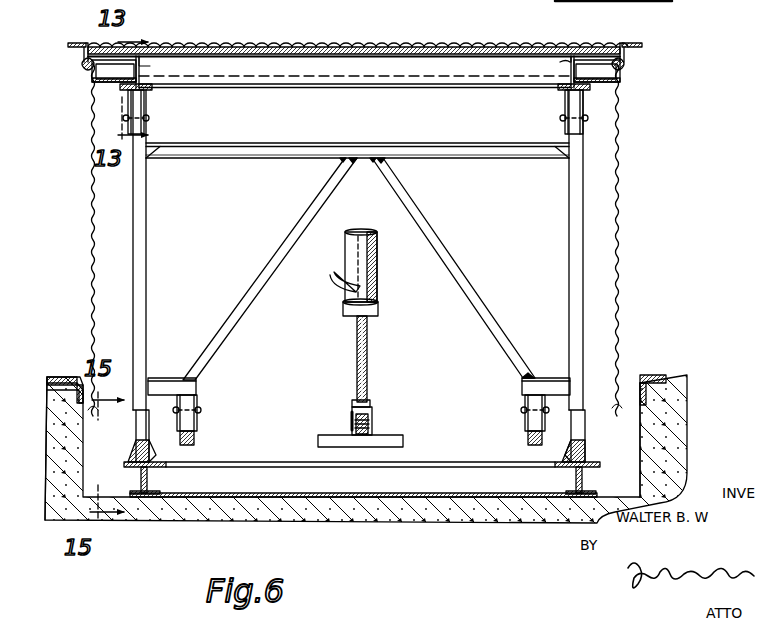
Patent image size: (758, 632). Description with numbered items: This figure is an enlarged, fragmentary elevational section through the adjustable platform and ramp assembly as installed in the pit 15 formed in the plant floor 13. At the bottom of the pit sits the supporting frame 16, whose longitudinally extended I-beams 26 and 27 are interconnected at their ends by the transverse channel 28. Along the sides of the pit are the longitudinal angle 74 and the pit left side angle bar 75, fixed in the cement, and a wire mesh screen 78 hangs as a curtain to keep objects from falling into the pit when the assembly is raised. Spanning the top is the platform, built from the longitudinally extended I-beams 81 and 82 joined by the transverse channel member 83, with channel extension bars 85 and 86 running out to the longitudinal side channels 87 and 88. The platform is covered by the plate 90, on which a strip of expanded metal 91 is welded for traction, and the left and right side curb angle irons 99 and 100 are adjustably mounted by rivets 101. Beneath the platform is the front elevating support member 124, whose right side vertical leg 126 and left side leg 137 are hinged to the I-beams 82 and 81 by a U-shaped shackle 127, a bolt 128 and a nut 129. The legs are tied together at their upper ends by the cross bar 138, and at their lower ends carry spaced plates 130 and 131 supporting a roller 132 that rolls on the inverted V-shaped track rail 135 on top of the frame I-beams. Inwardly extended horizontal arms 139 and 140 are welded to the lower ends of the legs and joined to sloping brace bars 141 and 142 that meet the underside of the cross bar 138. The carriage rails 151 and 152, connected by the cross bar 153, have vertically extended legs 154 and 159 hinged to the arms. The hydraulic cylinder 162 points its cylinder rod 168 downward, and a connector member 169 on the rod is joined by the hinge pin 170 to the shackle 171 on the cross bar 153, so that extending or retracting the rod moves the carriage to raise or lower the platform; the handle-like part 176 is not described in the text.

The floor 13 is at (684, 375).
The pit 15 is at (650, 443).
The supporting frame 16 is at (446, 462).
The I-beam 26 is at (574, 480).
The I-beam 27 is at (148, 482).
The transverse channel 28 is at (262, 470).
The longitudinal angle 74 is at (79, 380).
The pit left side angle bar 75 is at (648, 378).
The wire mesh screen 78 is at (90, 246).
The I-beam 81 is at (566, 54).
The I-beam 82 is at (150, 66).
The transverse channel member 83 is at (268, 68).
The channel extension bar 85 is at (598, 68).
The channel extension bar 86 is at (114, 68).
The longitudinal side channel 87 is at (622, 72).
The longitudinal side channel 88 is at (94, 74).
The plate 90 is at (586, 52).
The strip of expanded metal 91 is at (390, 46).
The left side curb angle iron 99 is at (640, 44).
The right side curb angle iron 100 is at (78, 42).
The rivet 101 is at (84, 64).
The front elevating support member 124 is at (442, 152).
The right side vertical leg 126 is at (144, 230).
The U-shaped shackle 127 is at (152, 98).
The bolt 128 is at (134, 118).
The nut 129 is at (150, 118).
The plate 130 is at (136, 424).
The plate 131 is at (150, 440).
The roller 132 is at (134, 446).
The track rail 135 is at (126, 466).
The left side leg 137 is at (570, 226).
The cross bar 138 is at (308, 150).
The horizontal arm 139 is at (168, 378).
The horizontal arm 140 is at (550, 382).
The brace bar 141 is at (280, 256).
The brace bar 142 is at (432, 236).
The carriage rail 151 is at (528, 442).
The carriage rail 152 is at (196, 438).
The cross bar 153 is at (392, 436).
The vertically extended leg 154 is at (196, 422).
The vertically extended leg 159 is at (526, 428).
The hydraulic cylinder 162 is at (372, 288).
The cylinder rod 168 is at (368, 364).
The connector member 169 is at (368, 404).
The hinge pin 170 is at (350, 412).
The shackle 171 is at (350, 428).
The handle 176 is at (340, 294).